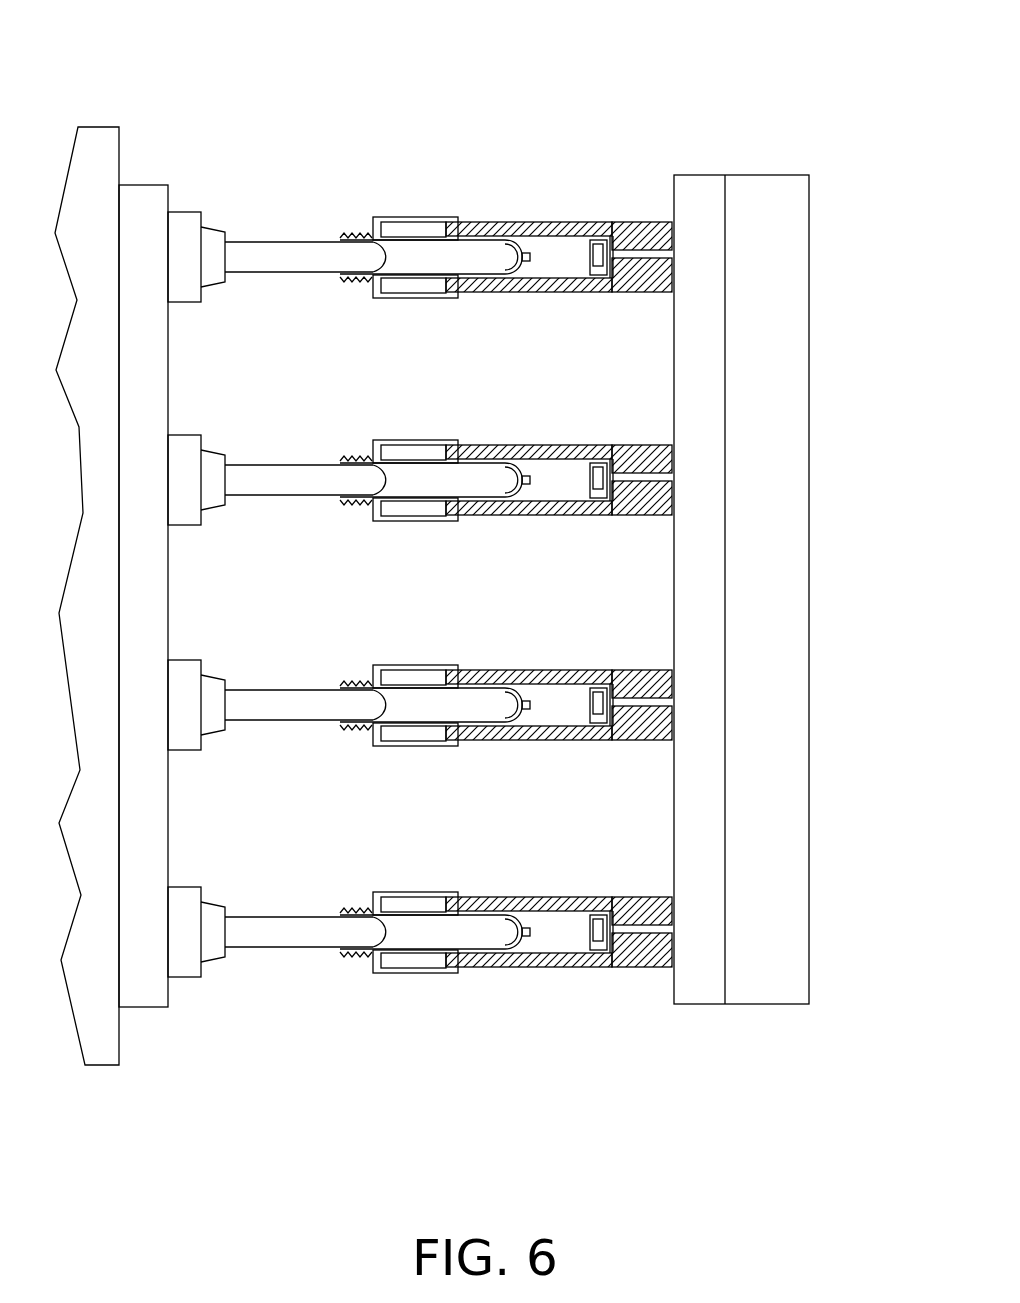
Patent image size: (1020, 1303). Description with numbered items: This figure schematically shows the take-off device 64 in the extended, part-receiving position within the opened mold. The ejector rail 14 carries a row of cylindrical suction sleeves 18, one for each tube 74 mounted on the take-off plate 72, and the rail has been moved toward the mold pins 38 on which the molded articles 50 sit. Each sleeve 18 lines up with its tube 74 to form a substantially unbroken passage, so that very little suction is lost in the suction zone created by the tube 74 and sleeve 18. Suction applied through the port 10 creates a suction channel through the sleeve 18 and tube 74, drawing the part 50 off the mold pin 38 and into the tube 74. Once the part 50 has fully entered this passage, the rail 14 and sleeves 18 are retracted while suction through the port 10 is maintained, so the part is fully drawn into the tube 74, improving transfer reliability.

The port 10 is at (607, 290).
The ejector rail 14 is at (413, 298).
The cylindrical suction sleeve 18 is at (408, 218).
The mold pin 38 is at (267, 478).
The molded article 50 is at (348, 230).
The take-off device 64 is at (408, 82).
The take-off plate 72 is at (780, 277).
The tube 74 is at (503, 292).